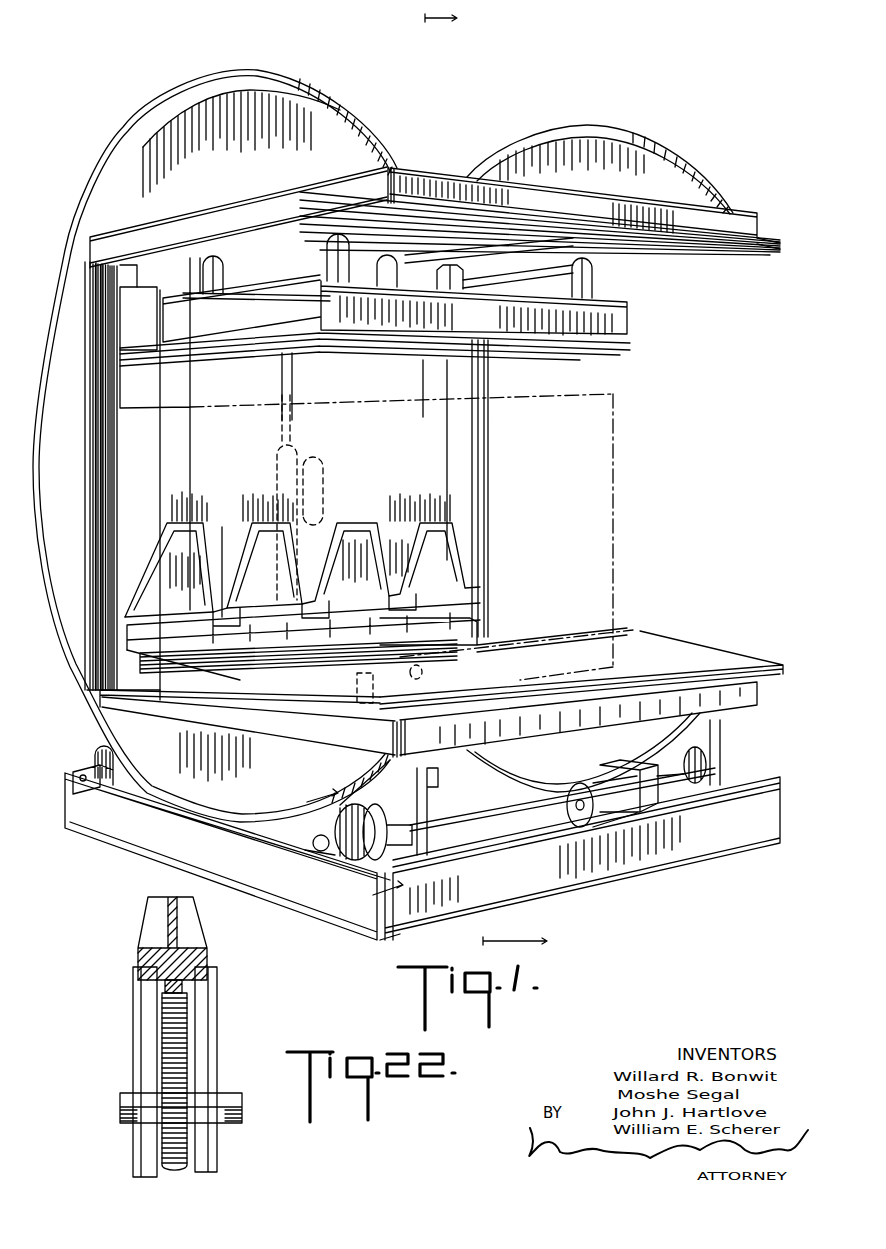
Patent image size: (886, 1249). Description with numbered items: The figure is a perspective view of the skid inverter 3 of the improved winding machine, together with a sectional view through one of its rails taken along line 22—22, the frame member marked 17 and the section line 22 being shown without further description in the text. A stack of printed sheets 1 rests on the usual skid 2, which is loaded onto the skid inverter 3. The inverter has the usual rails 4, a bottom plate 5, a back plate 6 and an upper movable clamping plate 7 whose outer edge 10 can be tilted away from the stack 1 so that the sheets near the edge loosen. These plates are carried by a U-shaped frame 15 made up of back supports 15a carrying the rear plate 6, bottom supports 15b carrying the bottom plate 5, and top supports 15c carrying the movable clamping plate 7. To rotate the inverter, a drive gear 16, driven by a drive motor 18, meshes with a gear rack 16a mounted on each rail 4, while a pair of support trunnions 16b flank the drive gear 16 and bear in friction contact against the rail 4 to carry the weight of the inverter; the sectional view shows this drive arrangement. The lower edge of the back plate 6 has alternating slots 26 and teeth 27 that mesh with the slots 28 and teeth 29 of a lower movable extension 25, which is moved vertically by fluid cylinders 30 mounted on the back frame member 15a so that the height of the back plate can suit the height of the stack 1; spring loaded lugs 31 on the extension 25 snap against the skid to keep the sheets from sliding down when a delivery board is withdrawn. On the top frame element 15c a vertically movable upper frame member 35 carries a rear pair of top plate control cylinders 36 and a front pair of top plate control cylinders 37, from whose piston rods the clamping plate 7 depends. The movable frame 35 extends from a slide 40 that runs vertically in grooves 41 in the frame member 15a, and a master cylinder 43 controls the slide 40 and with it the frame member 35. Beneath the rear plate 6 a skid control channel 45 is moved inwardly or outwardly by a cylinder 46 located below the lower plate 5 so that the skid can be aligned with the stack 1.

In FIG. 1, the stack of printed sheets 1 is at (603, 471).
In FIG. 1, the skid 2 is at (605, 655).
In FIG. 1, the skid inverter 3 is at (650, 131).
In FIG. 1, the rails 4 is at (258, 71).
In FIG. 22, the rails 4 is at (207, 953).
In FIG. 1, the bottom plate 5 is at (683, 665).
In FIG. 1, the back plate 6 is at (167, 445).
In FIG. 1, the upper movable clamping plate 7 is at (550, 351).
In FIG. 1, the outer edge of top clamping plate 10 is at (628, 343).
In FIG. 1, the U-shaped frame 15 is at (440, 177).
In FIG. 1, the back supports 15a is at (88, 420).
In FIG. 1, the bottom supports 15b is at (310, 723).
In FIG. 1, the top supports 15c is at (337, 193).
In FIG. 1, the drive gear 16 is at (88, 753).
In FIG. 22, the drive gear 16 is at (165, 1063).
In FIG. 1, the gear rack 16a is at (387, 781).
In FIG. 22, the gear rack 16a is at (185, 988).
In FIG. 1, the support trunnions 16b is at (360, 845).
In FIG. 22, the support trunnions 16b is at (133, 1032).
In FIG. 1, the base frame 17 is at (663, 850).
In FIG. 1, the drive motor 18 is at (573, 818).
In FIG. 1, the section line 22 is at (363, 840).
In FIG. 1, the lower movable extension 25 is at (130, 623).
In FIG. 1, the slots 26 is at (177, 527).
In FIG. 1, the teeth 27 is at (223, 558).
In FIG. 1, the slots 28 is at (232, 602).
In FIG. 1, the teeth 29 is at (170, 558).
In FIG. 1, the fluid cylinders 30 is at (322, 497).
In FIG. 1, the spring loaded lugs 31 is at (173, 637).
In FIG. 1, the upper frame member 35 is at (607, 305).
In FIG. 1, the rear pair of top plate control cylinders 36 is at (225, 272).
In FIG. 1, the front pair of top plate control cylinders 37 is at (333, 270).
In FIG. 1, the slide 40 is at (187, 293).
In FIG. 1, the grooves 41 is at (98, 336).
In FIG. 1, the master cylinder 43 is at (297, 455).
In FIG. 1, the skid control channel 45 is at (158, 663).
In FIG. 1, the cylinder 46 is at (424, 670).